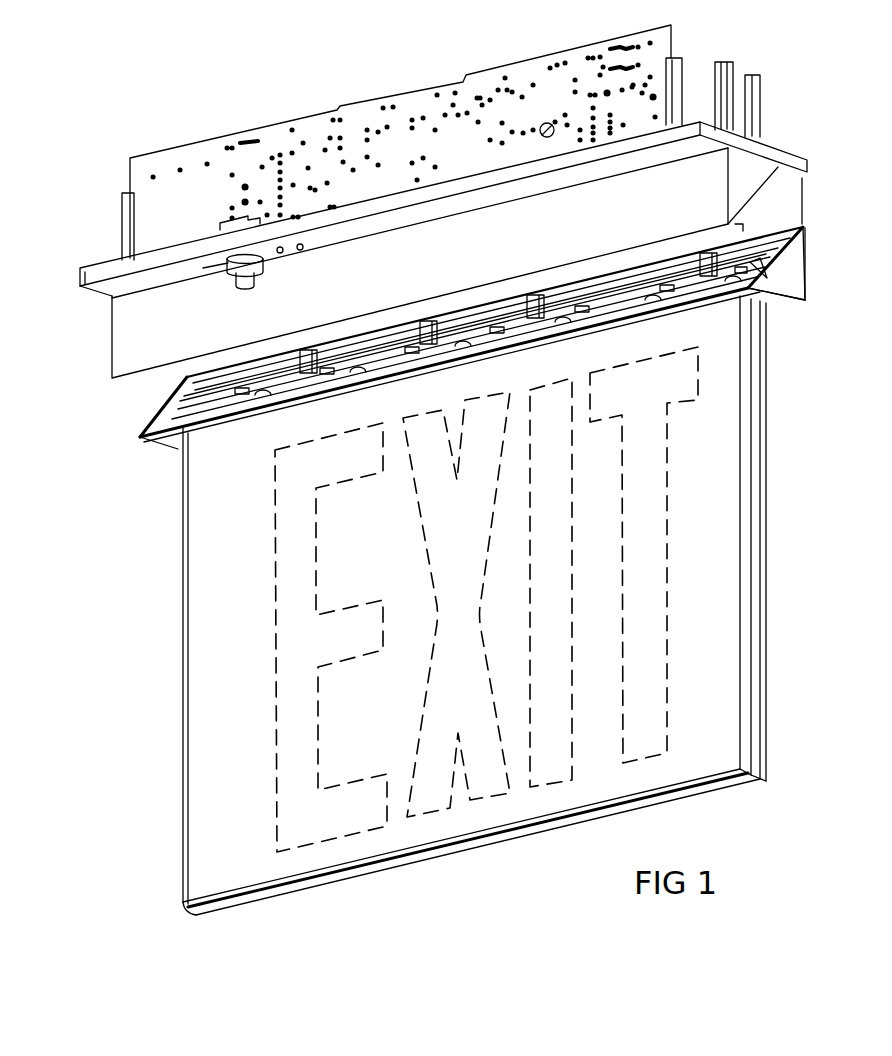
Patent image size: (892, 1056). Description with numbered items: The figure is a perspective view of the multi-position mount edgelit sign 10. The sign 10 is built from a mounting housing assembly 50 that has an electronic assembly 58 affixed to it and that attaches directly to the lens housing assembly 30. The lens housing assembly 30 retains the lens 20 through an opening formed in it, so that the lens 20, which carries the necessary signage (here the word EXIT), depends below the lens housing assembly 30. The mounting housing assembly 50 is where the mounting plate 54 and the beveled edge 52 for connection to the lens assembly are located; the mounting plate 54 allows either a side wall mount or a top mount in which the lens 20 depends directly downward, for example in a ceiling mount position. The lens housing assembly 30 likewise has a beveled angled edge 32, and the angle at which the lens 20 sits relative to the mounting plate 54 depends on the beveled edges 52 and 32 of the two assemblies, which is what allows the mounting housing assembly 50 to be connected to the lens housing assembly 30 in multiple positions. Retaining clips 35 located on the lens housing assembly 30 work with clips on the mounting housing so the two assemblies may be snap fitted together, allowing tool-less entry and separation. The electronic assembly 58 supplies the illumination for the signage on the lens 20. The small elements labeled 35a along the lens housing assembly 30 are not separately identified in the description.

The multi-position mount edgelit sign 10 is at (154, 77).
The lens 20 is at (235, 668).
The lens housing assembly 30 is at (140, 440).
The beveled angled edge 32 is at (806, 258).
The retaining clips 35 is at (323, 372).
The LEDs 35a is at (402, 358).
The mounting housing assembly 50 is at (112, 332).
The beveled edge 52 is at (757, 192).
The mounting plate 54 is at (778, 167).
The electronic assembly 58 is at (694, 13).